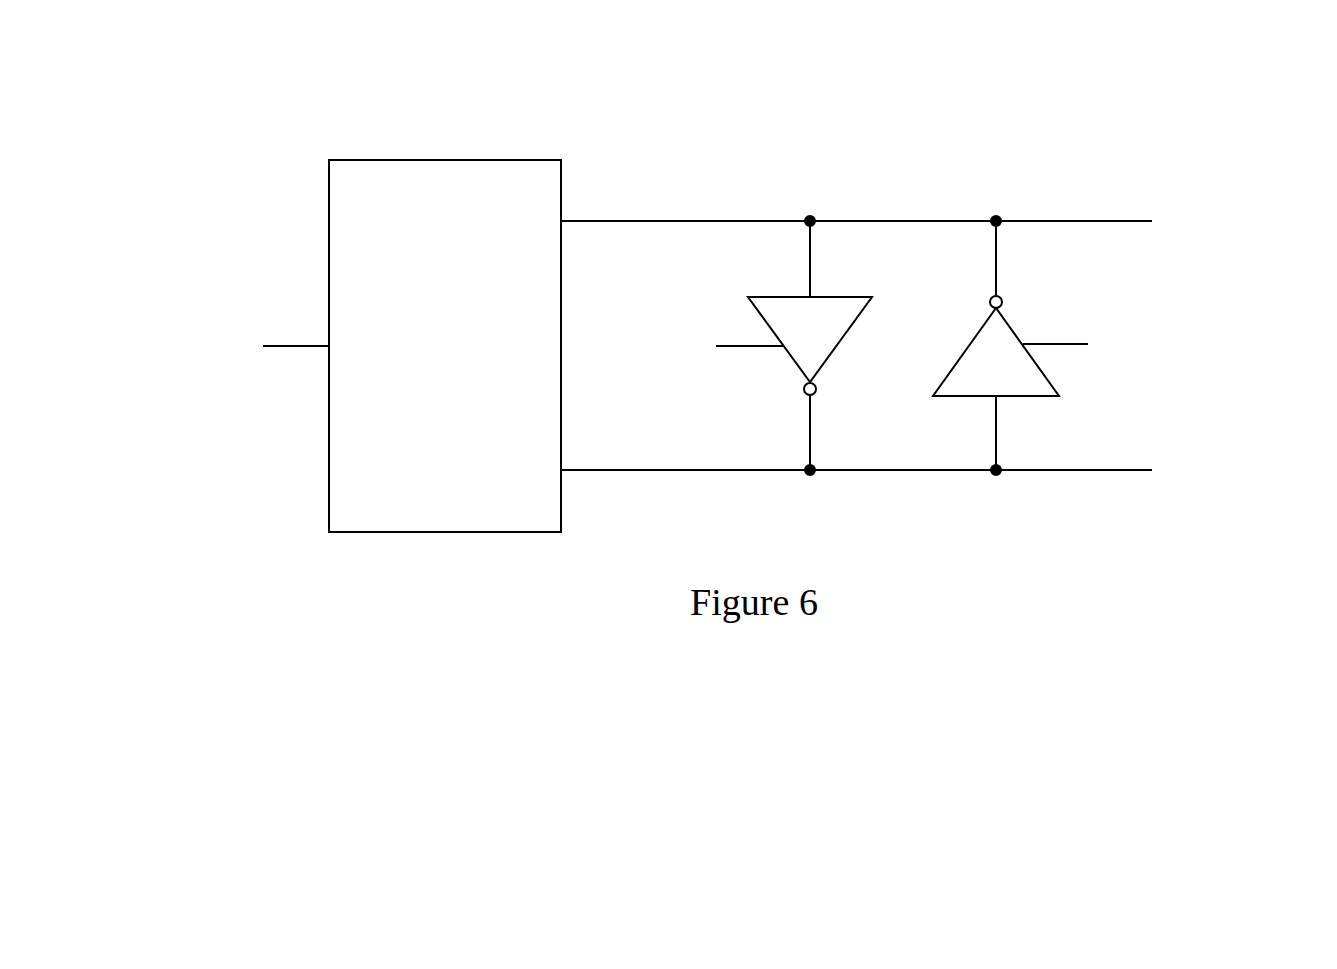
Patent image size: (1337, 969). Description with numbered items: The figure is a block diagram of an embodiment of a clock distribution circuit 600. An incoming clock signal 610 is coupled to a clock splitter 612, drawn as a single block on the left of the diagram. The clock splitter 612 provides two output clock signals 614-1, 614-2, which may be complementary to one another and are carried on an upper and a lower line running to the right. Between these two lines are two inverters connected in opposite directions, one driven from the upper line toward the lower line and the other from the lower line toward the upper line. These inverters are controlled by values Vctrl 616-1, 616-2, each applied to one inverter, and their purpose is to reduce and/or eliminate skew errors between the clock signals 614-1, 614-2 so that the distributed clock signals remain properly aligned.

The clock distribution circuit 600 is at (1000, 52).
The clock signal 610 is at (223, 338).
The clock splitter 612 is at (465, 388).
The clock signal 614-1 is at (931, 221).
The clock signal 614-2 is at (931, 463).
The value Vctrl 616-1 is at (761, 345).
The value Vctrl 616-2 is at (1044, 345).